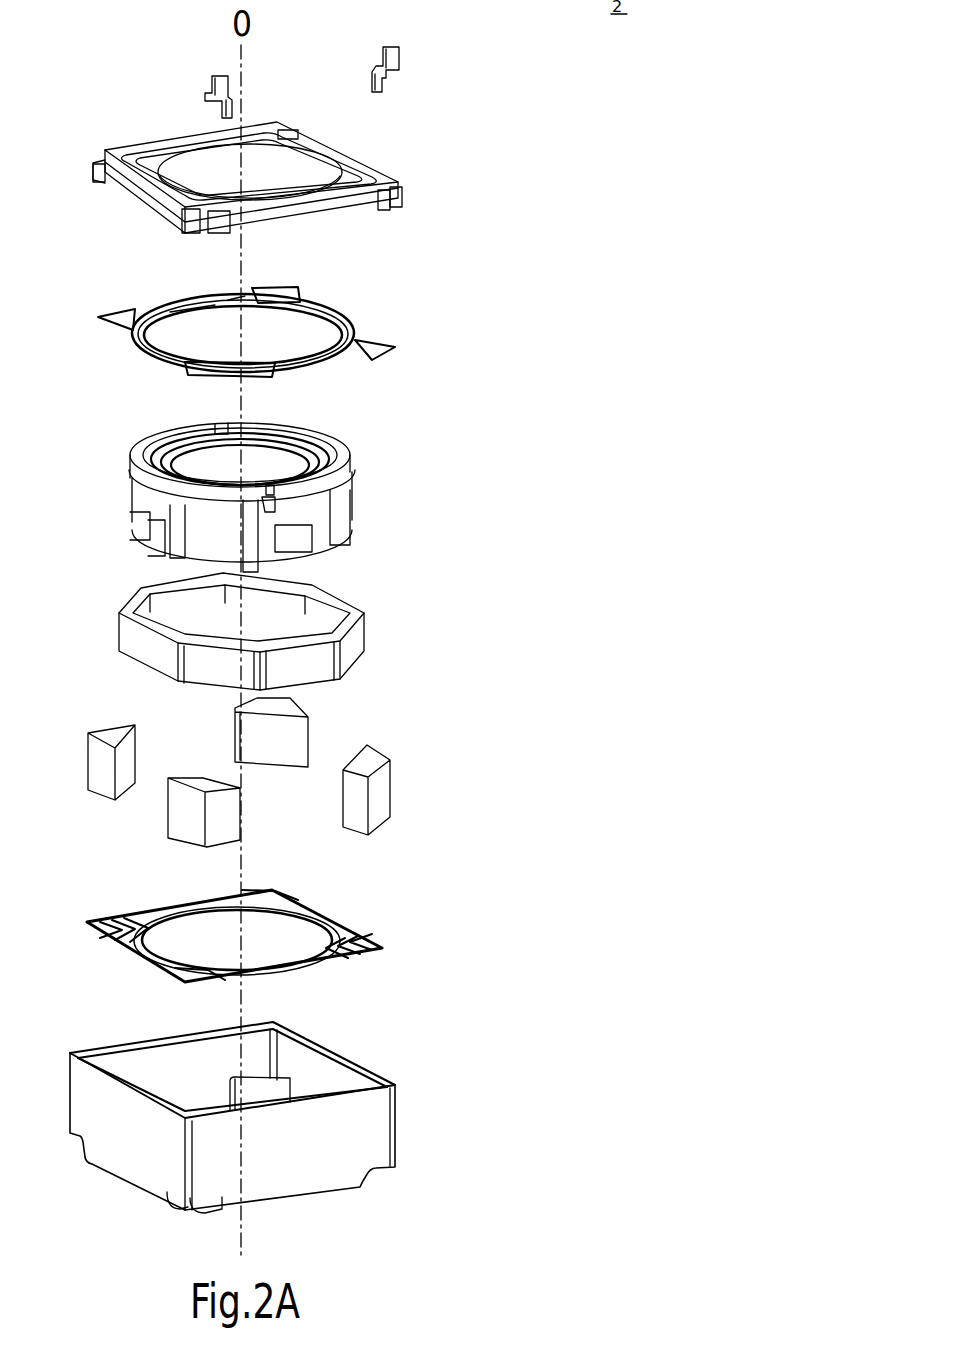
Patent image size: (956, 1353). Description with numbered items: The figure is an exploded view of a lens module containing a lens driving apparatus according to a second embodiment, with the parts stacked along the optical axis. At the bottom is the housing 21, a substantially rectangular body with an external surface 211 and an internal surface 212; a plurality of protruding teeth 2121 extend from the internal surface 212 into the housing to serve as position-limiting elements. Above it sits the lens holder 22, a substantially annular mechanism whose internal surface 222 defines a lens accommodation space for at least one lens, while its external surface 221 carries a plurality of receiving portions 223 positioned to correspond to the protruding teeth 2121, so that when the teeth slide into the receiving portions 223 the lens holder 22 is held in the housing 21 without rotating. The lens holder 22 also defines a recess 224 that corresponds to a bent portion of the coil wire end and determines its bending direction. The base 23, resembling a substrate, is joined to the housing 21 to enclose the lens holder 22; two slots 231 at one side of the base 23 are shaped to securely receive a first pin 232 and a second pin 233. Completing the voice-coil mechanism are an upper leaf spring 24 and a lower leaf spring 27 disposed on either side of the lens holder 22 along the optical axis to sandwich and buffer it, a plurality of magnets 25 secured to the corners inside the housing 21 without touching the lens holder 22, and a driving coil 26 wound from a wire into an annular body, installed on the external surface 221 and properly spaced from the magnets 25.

The housing 21 is at (420, 1095).
The external surface 211 is at (380, 1145).
The internal surface 212 is at (318, 1068).
The protruding teeth 2121 is at (270, 1088).
The lens holder 22 is at (405, 436).
The external surface 221 is at (320, 519).
The internal surface 222 is at (278, 444).
The receiving portions 223 is at (212, 541).
The recess 224 is at (272, 510).
The base 23 is at (410, 139).
The slots 231 is at (392, 213).
The first pin 232 is at (397, 58).
The second pin 233 is at (209, 83).
The upper leaf spring 24 is at (362, 943).
The magnets 25 is at (402, 750).
The driving coil 26 is at (362, 637).
The lower leaf spring 27 is at (386, 339).